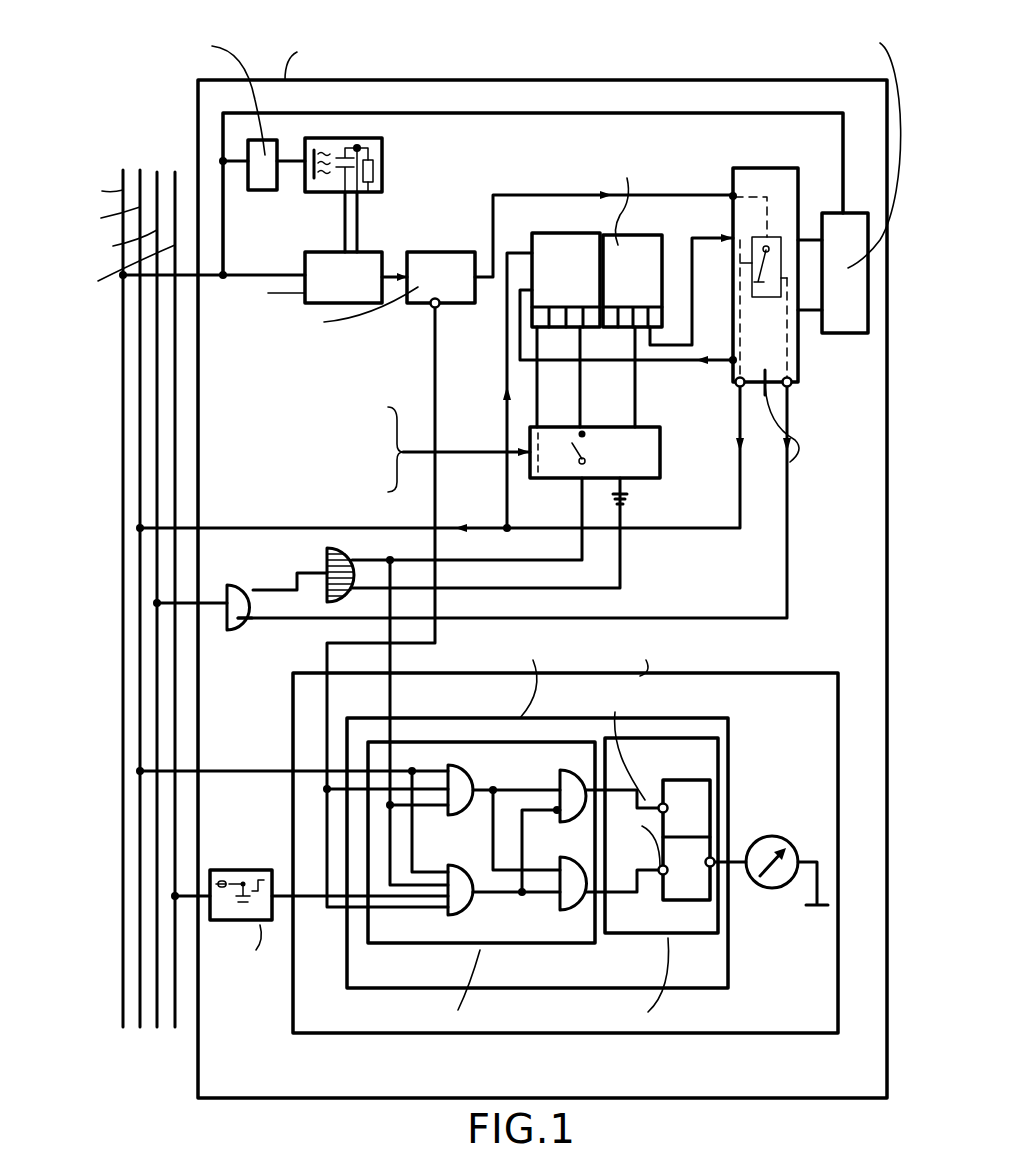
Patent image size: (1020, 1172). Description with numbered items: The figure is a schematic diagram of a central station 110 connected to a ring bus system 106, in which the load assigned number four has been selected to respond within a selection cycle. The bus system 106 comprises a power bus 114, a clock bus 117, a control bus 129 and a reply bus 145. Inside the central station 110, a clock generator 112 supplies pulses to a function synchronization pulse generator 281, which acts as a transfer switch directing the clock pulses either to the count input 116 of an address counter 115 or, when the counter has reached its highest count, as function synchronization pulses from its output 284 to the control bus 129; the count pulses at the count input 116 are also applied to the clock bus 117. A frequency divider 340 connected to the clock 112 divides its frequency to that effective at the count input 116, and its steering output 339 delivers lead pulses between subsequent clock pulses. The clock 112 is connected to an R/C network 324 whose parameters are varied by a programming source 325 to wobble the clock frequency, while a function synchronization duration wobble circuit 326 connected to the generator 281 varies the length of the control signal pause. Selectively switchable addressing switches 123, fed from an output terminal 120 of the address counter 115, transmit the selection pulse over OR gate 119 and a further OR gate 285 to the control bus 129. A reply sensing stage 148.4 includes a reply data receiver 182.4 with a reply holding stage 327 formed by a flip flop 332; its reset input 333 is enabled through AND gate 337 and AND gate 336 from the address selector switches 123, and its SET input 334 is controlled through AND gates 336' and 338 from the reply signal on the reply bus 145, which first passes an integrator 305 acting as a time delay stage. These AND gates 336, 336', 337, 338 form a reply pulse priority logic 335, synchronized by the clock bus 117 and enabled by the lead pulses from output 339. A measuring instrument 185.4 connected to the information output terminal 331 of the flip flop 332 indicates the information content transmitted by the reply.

The central station 110 is at (845, 112).
The bus system 106 is at (118, 552).
The power bus 114 is at (124, 172).
The clock bus 117 is at (140, 170).
The control bus 129 is at (158, 174).
The reply bus 145 is at (178, 568).
The programming source 325 is at (258, 182).
The R/C network 324 is at (384, 148).
The clock generator 112 is at (320, 270).
The frequency divider 340 is at (445, 268).
The steering output 339 is at (431, 310).
The count input 116 is at (540, 252).
The address counter 115 is at (641, 252).
The output terminal 120 is at (658, 320).
The function synchronization pulse generator 281 is at (768, 186).
The output 284 is at (792, 386).
The function synchronization duration wobble circuit 326 is at (845, 337).
The addressing switches 123 is at (652, 470).
The OR gate 285 is at (242, 580).
The OR gate 119 is at (338, 550).
The reply sensing stage 148.4 is at (806, 676).
The reply data receiver 182.4 is at (730, 730).
The reply pulse priority logic 335 is at (583, 938).
The reply holding stage 327 is at (688, 745).
The integrator 305 is at (255, 868).
The AND gate 336 is at (470, 803).
The AND gate 336' is at (444, 876).
The AND gate 337 is at (568, 778).
The AND gate 338 is at (570, 872).
The flip flop circuit 332 is at (684, 882).
The reset input 333 is at (660, 803).
The SET input 334 is at (660, 868).
The information output terminal 331 is at (714, 866).
The measuring instrument 185.4 is at (778, 842).